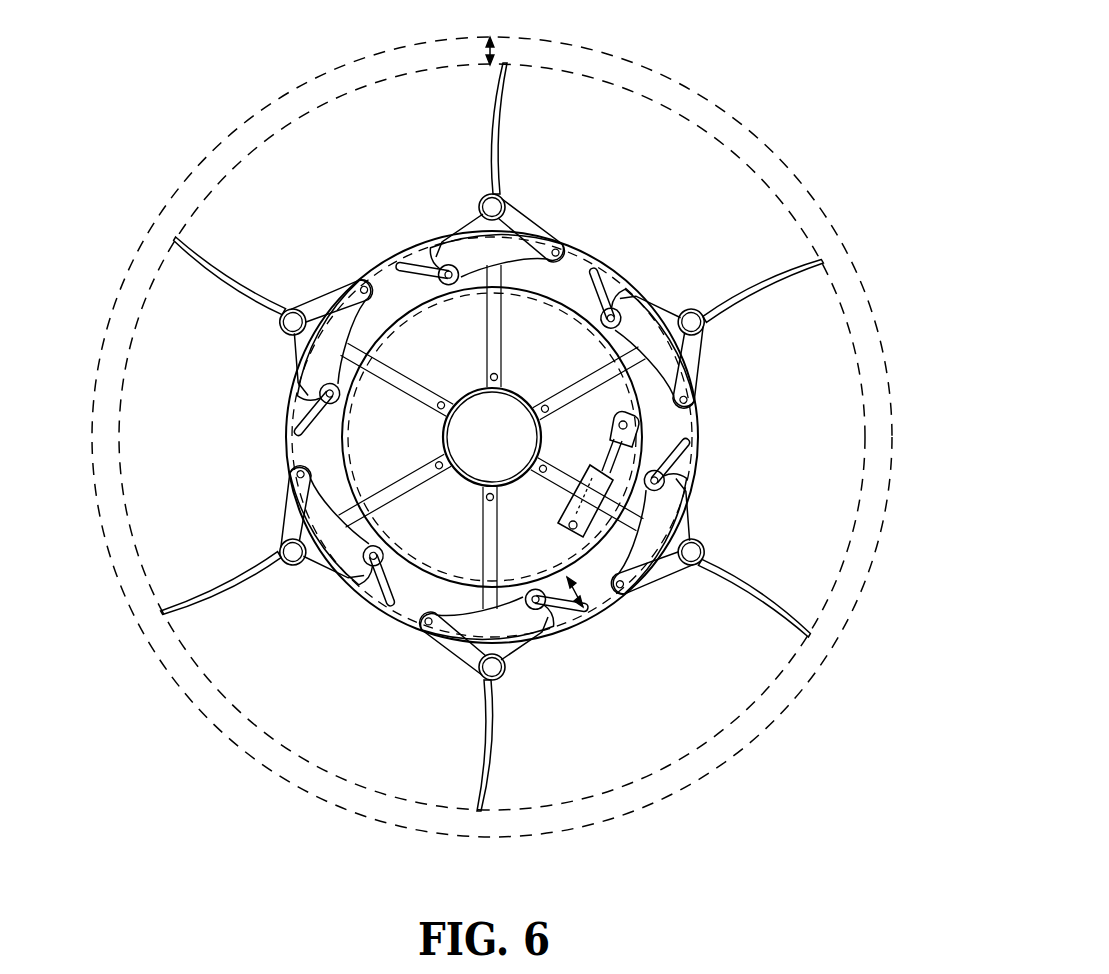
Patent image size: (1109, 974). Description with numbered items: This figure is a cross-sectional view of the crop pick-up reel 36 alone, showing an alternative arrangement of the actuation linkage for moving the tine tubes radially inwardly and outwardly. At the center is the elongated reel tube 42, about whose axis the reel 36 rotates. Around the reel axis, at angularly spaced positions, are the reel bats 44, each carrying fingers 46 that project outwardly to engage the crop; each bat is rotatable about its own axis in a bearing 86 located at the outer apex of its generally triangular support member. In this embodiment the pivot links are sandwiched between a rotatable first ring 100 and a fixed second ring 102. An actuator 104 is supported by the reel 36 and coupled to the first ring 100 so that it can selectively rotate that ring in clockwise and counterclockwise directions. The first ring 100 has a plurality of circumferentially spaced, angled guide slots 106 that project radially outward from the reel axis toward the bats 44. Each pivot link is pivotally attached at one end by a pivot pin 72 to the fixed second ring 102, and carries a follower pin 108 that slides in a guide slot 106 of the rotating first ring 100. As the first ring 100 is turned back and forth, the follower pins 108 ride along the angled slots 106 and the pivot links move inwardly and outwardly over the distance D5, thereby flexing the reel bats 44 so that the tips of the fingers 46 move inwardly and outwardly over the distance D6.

The crop pick-up reel 36 is at (526, 428).
The elongated reel tube 42 is at (492, 437).
The reel bat 44 is at (537, 437).
The finger 46 is at (554, 437).
The pivot pin 72 is at (549, 437).
The bearing 86 is at (497, 437).
The rotatable first ring 100 is at (550, 437).
The fixed second ring 102 is at (492, 436).
The actuator 104 is at (598, 474).
The angled guide slot 106 is at (492, 381).
The follower pin 108 is at (492, 420).
The distance of pivot link movement D5 is at (611, 631).
The distance of finger tip movement D6 is at (548, 32).